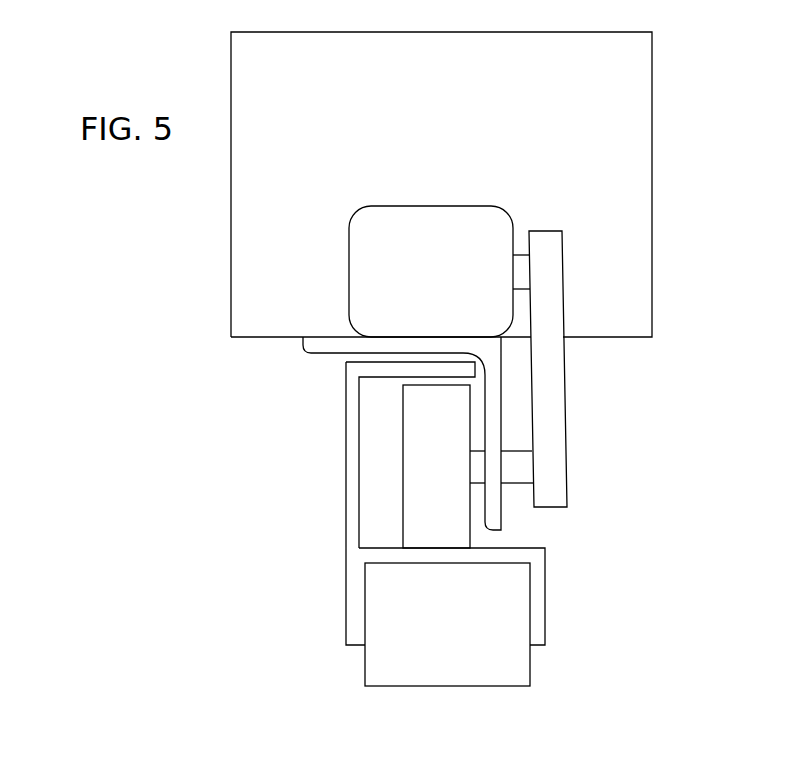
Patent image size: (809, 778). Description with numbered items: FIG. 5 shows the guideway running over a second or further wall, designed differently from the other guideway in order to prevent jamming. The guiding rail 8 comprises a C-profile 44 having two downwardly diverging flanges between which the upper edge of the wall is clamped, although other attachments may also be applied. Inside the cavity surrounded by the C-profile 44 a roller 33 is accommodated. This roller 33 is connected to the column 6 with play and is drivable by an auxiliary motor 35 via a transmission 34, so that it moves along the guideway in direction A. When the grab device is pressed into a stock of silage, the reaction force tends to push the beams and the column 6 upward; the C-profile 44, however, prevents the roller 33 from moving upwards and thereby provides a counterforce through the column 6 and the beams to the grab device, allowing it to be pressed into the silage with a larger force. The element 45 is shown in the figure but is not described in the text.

The column 6 is at (635, 138).
The auxiliary motor 35 is at (483, 303).
The transmission 34 is at (565, 378).
The C-profile 44 is at (357, 381).
The roller 33 is at (420, 468).
The guiding rail 8 is at (357, 574).
The receiving block 45 is at (497, 665).